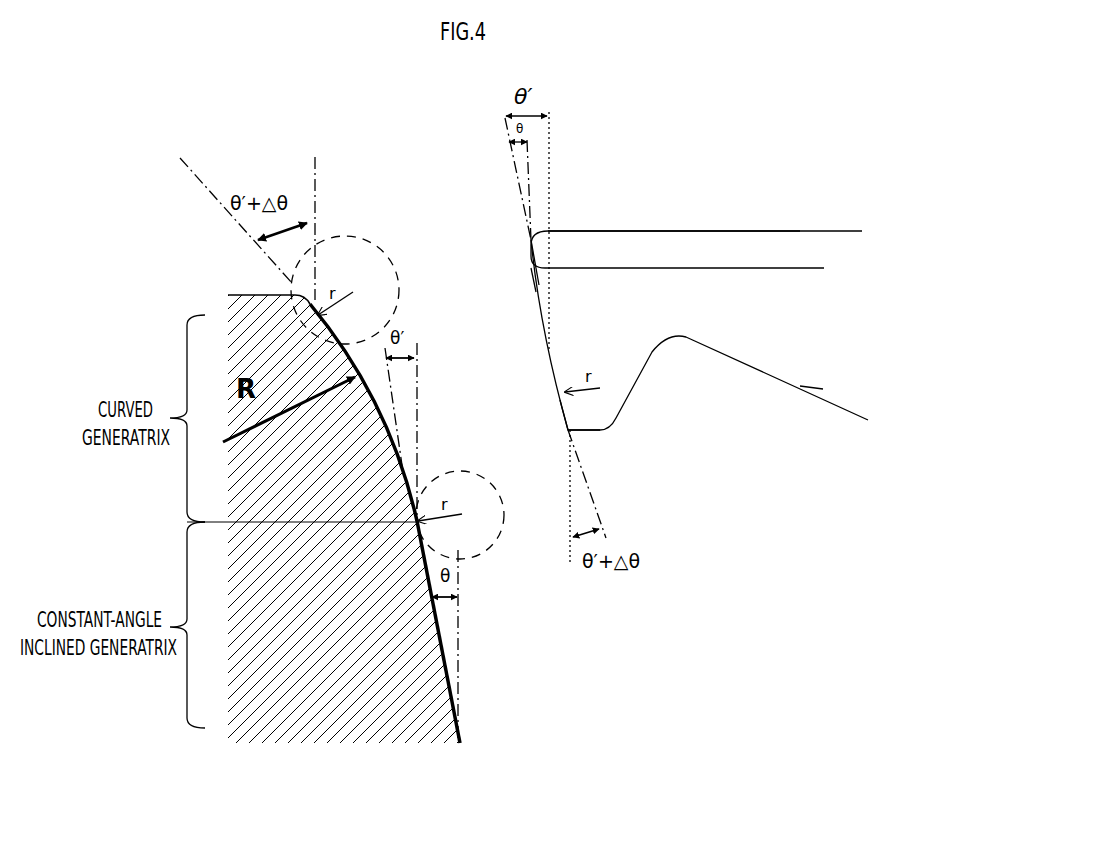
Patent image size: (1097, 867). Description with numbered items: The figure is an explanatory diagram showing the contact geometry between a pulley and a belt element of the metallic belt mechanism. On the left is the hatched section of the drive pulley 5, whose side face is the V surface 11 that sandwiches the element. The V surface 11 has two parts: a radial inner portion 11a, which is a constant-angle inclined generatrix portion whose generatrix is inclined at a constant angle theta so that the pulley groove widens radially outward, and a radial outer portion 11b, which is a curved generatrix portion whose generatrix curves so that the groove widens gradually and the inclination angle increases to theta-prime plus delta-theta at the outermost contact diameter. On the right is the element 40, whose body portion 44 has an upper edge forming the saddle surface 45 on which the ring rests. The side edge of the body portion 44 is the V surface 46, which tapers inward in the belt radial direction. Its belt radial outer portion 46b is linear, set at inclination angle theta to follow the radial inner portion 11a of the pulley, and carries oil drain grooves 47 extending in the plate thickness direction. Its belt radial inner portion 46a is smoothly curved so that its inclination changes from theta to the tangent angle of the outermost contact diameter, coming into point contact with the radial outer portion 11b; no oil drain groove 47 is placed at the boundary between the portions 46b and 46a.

The drive pulley 5 is at (320, 678).
The V surface 11 is at (430, 517).
The radial inner portion 11a is at (440, 650).
The radial outer portion 11b is at (347, 358).
The element 40 is at (780, 405).
The body portion 44 is at (763, 290).
The saddle surface 45 is at (653, 231).
The V surface 46 is at (517, 320).
The belt radial inner portion 46a is at (563, 407).
The belt radial outer portion 46b is at (530, 262).
The oil drain groove 47 is at (535, 291).